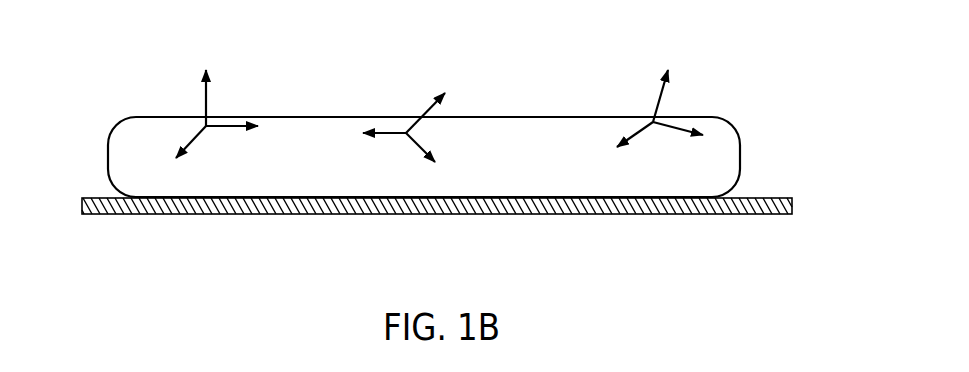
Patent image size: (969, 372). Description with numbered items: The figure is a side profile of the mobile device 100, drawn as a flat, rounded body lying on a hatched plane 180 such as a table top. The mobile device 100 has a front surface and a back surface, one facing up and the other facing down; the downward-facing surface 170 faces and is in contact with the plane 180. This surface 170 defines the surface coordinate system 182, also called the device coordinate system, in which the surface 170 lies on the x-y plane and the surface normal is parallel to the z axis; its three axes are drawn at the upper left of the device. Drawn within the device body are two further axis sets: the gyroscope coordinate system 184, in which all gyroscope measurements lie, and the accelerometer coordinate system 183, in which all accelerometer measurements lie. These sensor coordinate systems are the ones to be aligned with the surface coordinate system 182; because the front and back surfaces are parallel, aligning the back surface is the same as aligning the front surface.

The mobile device 100 is at (155, 55).
The surface 170 is at (160, 197).
The plane 180 is at (740, 205).
The surface coordinate system 182 is at (328, 60).
The accelerometer coordinate system 183 is at (797, 94).
The gyroscope coordinate system 184 is at (565, 68).